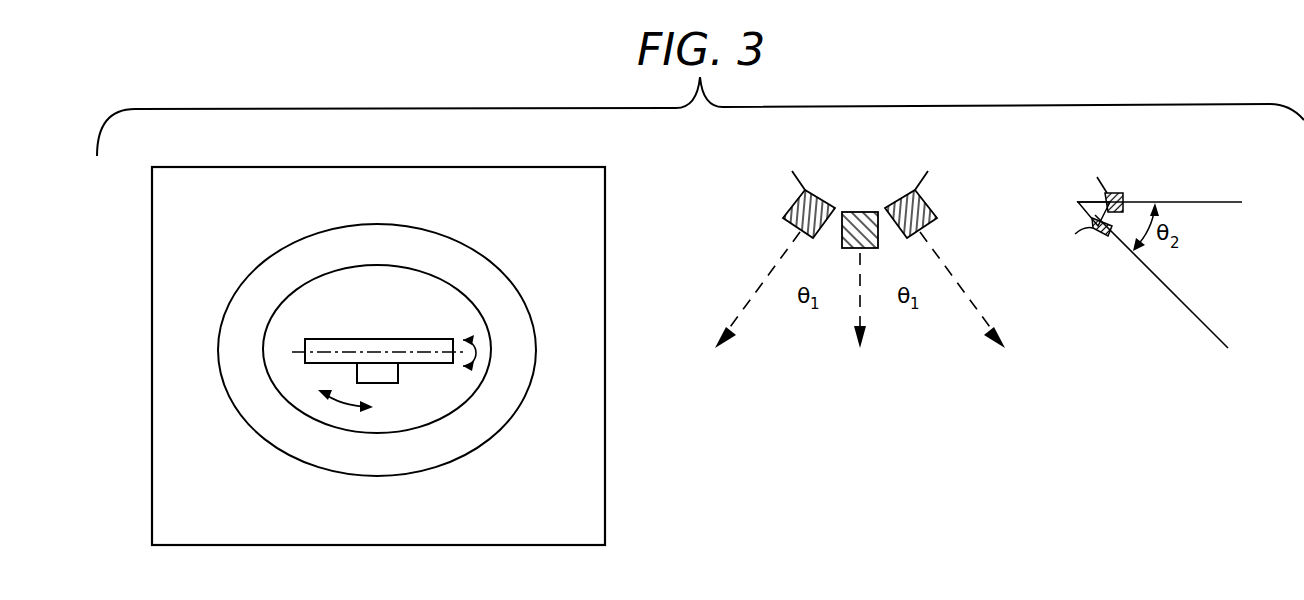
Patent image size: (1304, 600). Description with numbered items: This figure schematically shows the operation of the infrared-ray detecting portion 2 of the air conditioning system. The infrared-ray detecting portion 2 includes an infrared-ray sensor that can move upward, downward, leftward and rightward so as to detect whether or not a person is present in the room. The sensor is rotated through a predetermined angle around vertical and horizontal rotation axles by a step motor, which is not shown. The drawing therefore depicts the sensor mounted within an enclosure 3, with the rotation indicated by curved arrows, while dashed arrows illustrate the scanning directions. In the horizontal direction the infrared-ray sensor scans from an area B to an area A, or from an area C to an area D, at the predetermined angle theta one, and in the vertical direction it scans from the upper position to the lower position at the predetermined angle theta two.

The infrared-ray detecting portion 2 is at (387, 377).
The chamber wall 3 is at (592, 220).
The area A is at (750, 307).
The area B is at (863, 318).
The area C is at (863, 318).
The area D is at (970, 307).